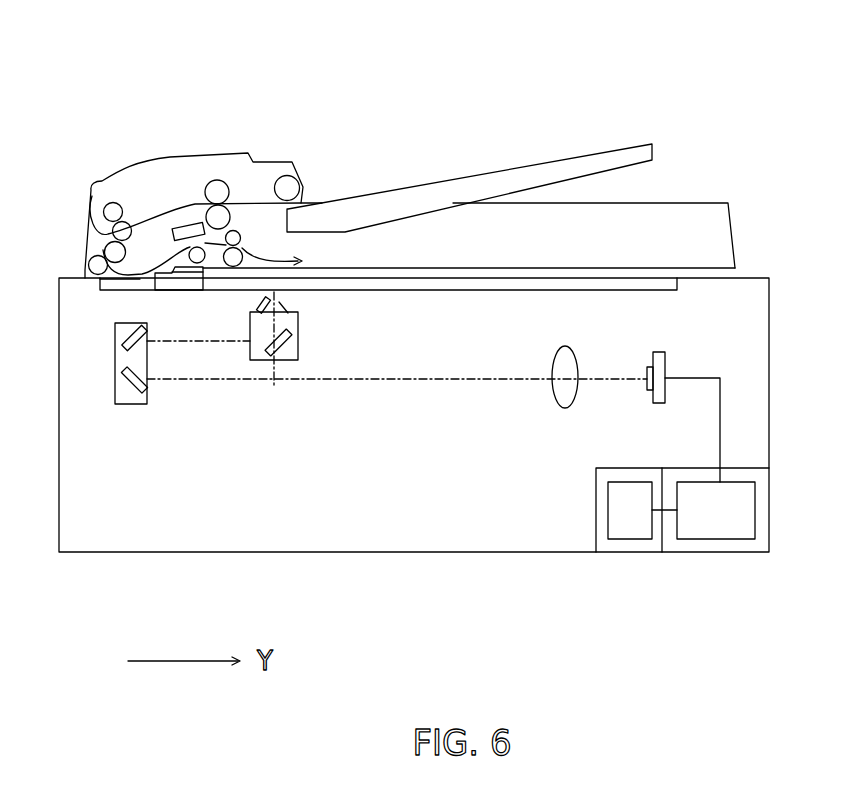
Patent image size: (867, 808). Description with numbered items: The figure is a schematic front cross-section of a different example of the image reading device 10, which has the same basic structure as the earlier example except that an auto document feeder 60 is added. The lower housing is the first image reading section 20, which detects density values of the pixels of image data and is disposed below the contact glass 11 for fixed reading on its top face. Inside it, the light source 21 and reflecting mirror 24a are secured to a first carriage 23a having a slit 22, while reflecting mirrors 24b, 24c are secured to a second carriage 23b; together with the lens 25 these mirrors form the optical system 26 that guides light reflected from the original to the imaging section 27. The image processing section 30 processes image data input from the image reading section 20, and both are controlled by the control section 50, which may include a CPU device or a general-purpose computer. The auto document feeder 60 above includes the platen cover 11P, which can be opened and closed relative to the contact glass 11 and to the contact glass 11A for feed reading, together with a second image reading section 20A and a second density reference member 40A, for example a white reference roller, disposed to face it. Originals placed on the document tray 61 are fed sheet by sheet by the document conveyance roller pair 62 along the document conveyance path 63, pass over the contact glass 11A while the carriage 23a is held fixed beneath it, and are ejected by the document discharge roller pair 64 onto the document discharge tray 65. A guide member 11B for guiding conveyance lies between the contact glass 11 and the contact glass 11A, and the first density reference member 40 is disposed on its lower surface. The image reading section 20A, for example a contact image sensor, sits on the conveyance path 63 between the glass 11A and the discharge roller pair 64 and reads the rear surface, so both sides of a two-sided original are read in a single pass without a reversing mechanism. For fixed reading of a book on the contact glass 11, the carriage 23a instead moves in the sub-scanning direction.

The image reading device 10 is at (762, 93).
The image reading section 20 is at (781, 319).
The contact glass 11 is at (673, 293).
The contact glass for feed reading 11A is at (100, 284).
The guide member 11B is at (172, 270).
The platen cover 11P is at (738, 231).
The density reference member 40 is at (170, 291).
The density reference member 40A is at (203, 262).
The image reading section 20A is at (177, 223).
The light source 21 is at (250, 312).
The slit 22 is at (270, 297).
The first carriage 23a is at (299, 343).
The second carriage 23b is at (120, 380).
The reflecting mirror 24a is at (280, 366).
The reflecting mirror 24b is at (121, 338).
The reflecting mirror 24c is at (134, 398).
The lens 25 is at (570, 408).
The optical system 26 is at (248, 455).
The imaging section 27 is at (660, 404).
The image processing section 30 is at (757, 507).
The control section 50 is at (622, 542).
The auto document feeder 60 is at (485, 117).
The document tray 61 is at (548, 167).
The document conveyance roller pair 62 is at (215, 185).
The document conveyance path 63 is at (91, 208).
The document discharge roller pair 64 is at (233, 235).
The document discharge tray 65 is at (377, 268).